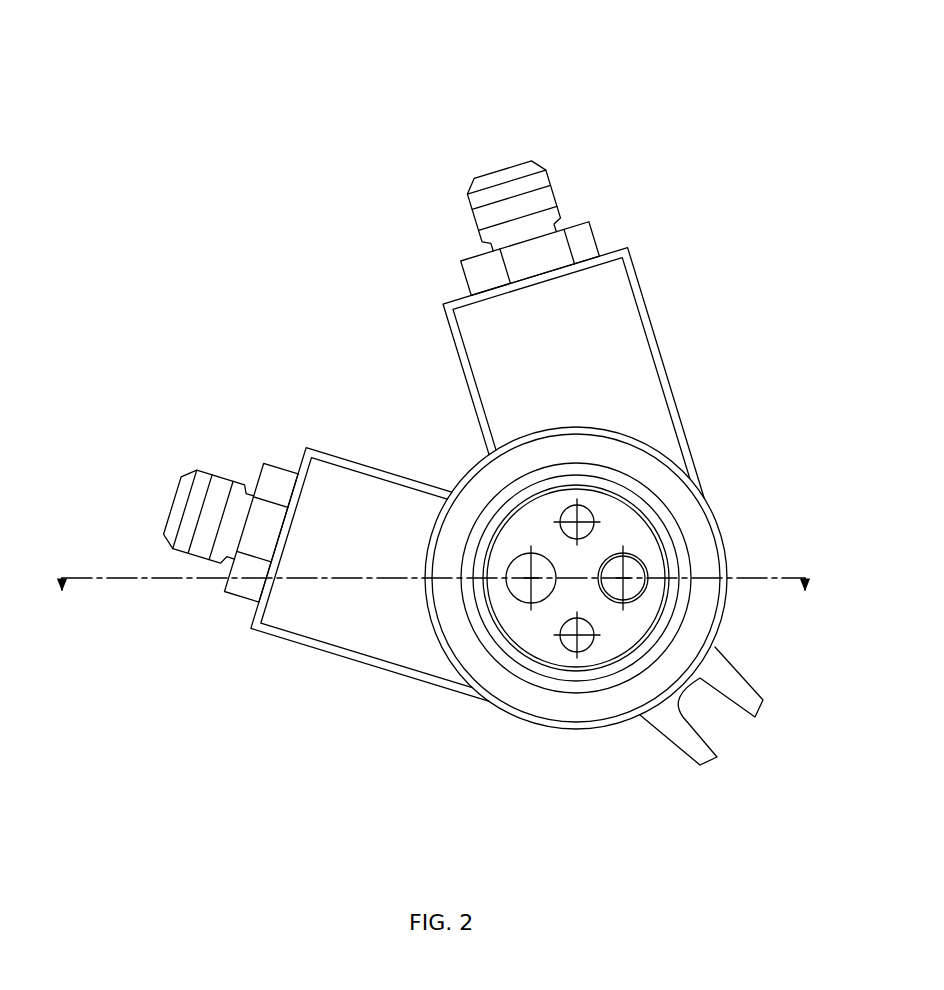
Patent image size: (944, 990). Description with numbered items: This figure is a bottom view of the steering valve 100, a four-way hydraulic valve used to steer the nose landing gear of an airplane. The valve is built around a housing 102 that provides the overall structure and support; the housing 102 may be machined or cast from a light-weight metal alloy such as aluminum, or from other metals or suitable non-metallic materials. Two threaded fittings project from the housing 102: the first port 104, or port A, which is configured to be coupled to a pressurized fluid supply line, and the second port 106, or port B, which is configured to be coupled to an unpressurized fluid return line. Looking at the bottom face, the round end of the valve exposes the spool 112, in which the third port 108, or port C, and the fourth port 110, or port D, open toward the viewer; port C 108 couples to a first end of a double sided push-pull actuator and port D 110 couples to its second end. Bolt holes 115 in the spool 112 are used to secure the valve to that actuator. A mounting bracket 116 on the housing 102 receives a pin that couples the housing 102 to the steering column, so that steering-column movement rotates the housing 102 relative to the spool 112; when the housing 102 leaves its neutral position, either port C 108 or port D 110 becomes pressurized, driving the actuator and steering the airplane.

The steering valve 100 is at (215, 103).
The housing 102 is at (653, 307).
The first port 104 is at (181, 478).
The second port 106 is at (518, 160).
The third port 108 is at (533, 601).
The fourth port 110 is at (623, 601).
The spool 112 is at (655, 557).
The bolt holes 115 is at (587, 518).
The mounting bracket 116 is at (752, 682).